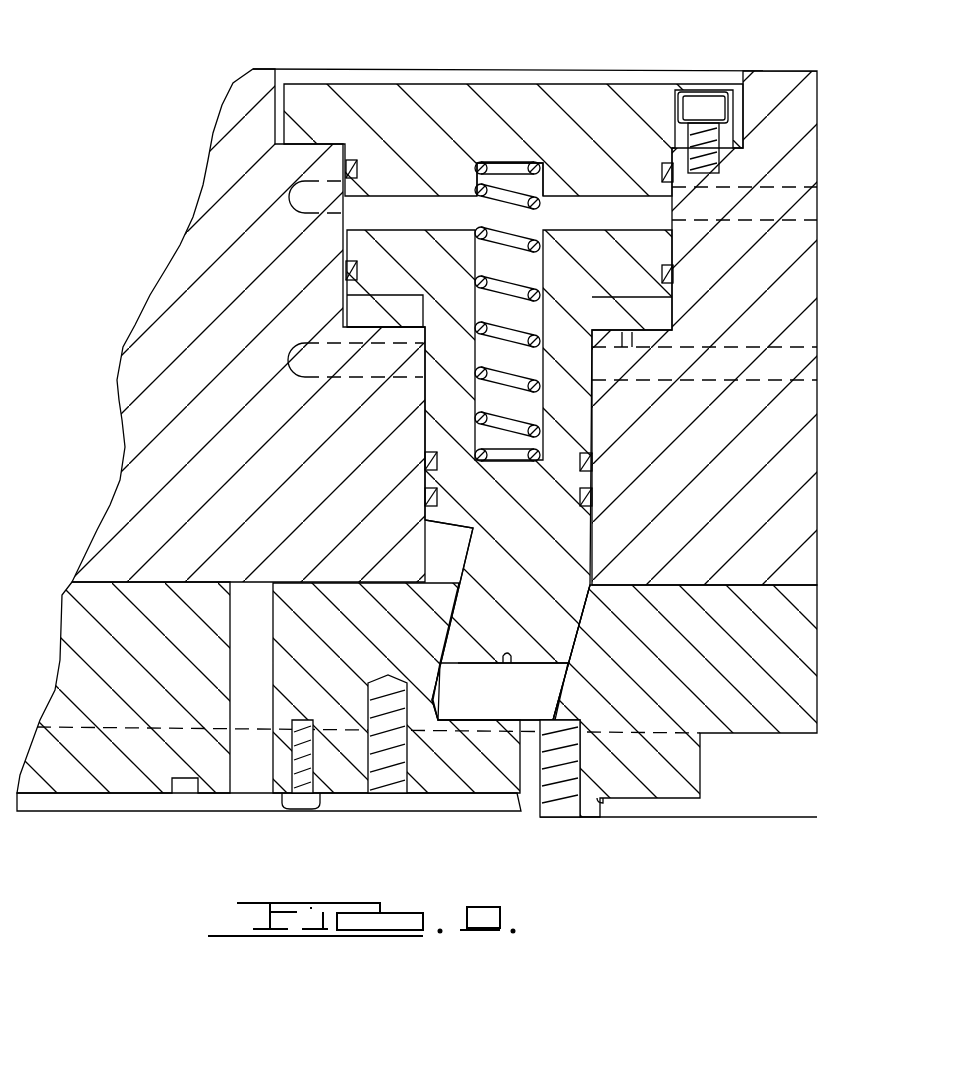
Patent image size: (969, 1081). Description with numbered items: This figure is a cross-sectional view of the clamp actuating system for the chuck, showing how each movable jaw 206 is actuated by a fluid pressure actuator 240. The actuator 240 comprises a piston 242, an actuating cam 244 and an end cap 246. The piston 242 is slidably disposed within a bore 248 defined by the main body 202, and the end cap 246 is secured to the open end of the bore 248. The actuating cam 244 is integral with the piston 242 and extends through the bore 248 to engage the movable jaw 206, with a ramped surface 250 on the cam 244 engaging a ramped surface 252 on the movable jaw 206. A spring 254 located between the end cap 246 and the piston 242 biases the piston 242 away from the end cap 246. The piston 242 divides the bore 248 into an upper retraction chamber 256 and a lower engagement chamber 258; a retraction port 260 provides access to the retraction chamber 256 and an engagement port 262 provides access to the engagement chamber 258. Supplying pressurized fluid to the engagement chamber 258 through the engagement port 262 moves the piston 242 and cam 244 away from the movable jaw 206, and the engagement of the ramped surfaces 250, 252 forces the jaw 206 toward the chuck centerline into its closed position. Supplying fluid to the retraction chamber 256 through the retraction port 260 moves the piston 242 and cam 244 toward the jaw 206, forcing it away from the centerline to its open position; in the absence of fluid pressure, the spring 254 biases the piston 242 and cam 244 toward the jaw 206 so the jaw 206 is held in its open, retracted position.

The main body 202 is at (155, 302).
The movable jaw 206 is at (673, 790).
The fluid pressure actuator 240 is at (238, 46).
The piston 242 is at (390, 242).
The actuating cam 244 is at (497, 582).
The end cap 246 is at (457, 105).
The bore 248 is at (350, 209).
The ramped surface 250 is at (457, 596).
The ramped surface 252 is at (460, 636).
The spring 254 is at (513, 192).
The retraction chamber 256 is at (377, 203).
The engagement chamber 258 is at (357, 313).
The retraction port 260 is at (783, 195).
The engagement port 262 is at (695, 374).